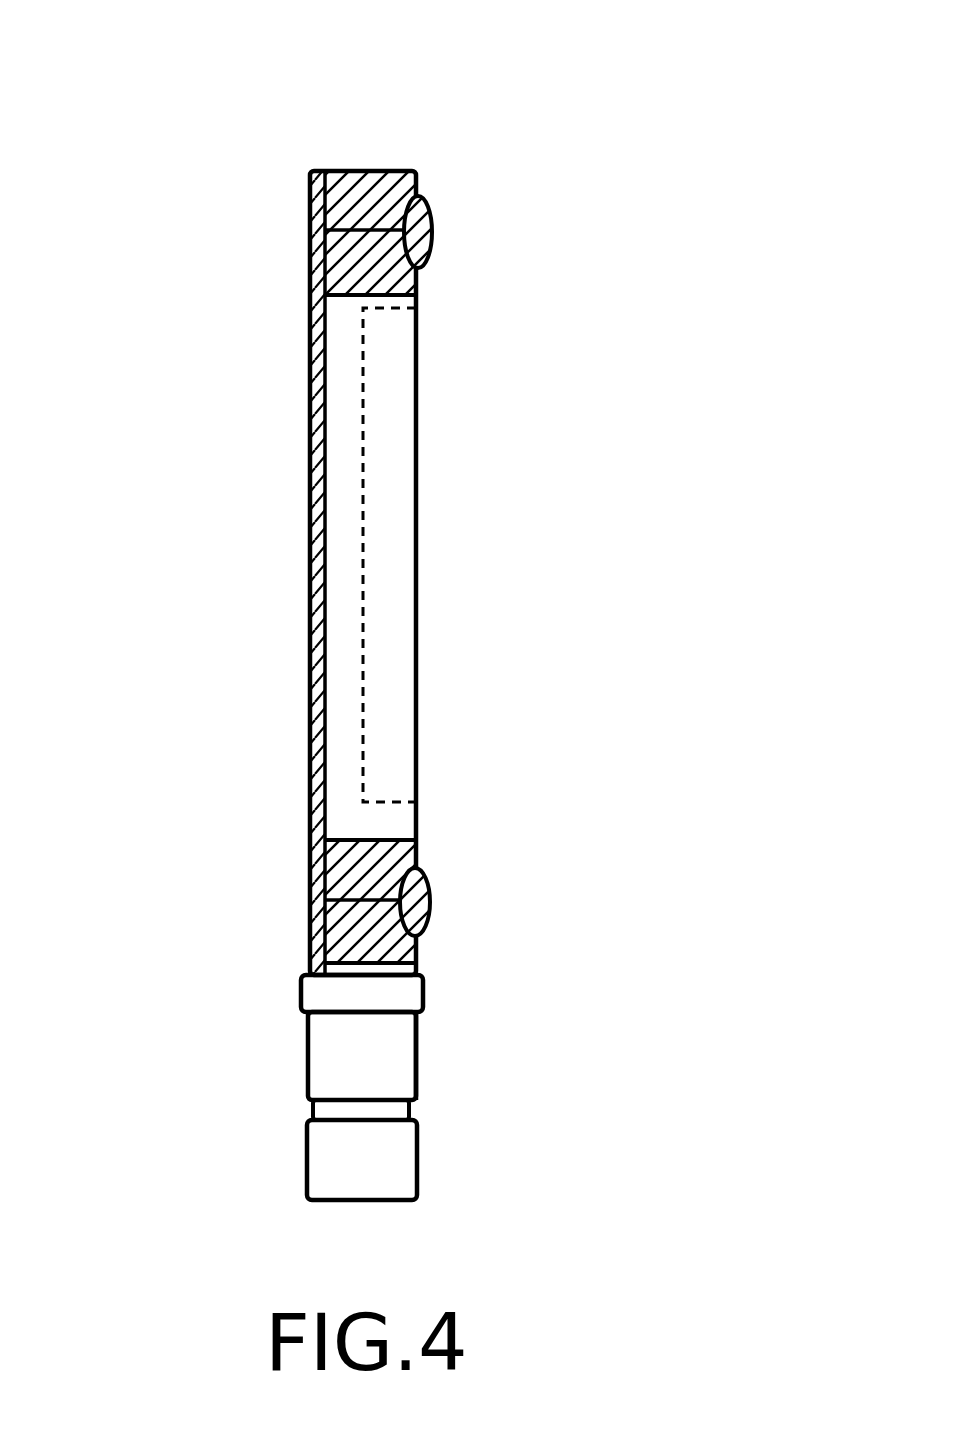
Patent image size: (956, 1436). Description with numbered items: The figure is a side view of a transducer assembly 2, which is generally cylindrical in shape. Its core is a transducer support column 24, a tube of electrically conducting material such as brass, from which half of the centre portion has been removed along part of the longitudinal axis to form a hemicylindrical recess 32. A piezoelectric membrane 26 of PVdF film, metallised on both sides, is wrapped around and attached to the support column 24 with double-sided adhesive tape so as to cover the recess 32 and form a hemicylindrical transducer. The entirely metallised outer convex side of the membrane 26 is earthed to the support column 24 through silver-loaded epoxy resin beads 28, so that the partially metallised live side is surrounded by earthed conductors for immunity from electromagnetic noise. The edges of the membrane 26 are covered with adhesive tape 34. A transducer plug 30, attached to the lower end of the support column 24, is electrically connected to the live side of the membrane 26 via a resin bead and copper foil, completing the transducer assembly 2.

The transducer assembly 2 is at (310, 578).
The transducer support column 24 is at (417, 848).
The piezoelectric membrane 26 is at (343, 378).
The silver-loaded epoxy resin beads 28 is at (430, 227).
The transducer plug 30 is at (380, 1168).
The hemicylindrical recess 32 is at (388, 693).
The adhesive tape 34 is at (368, 190).